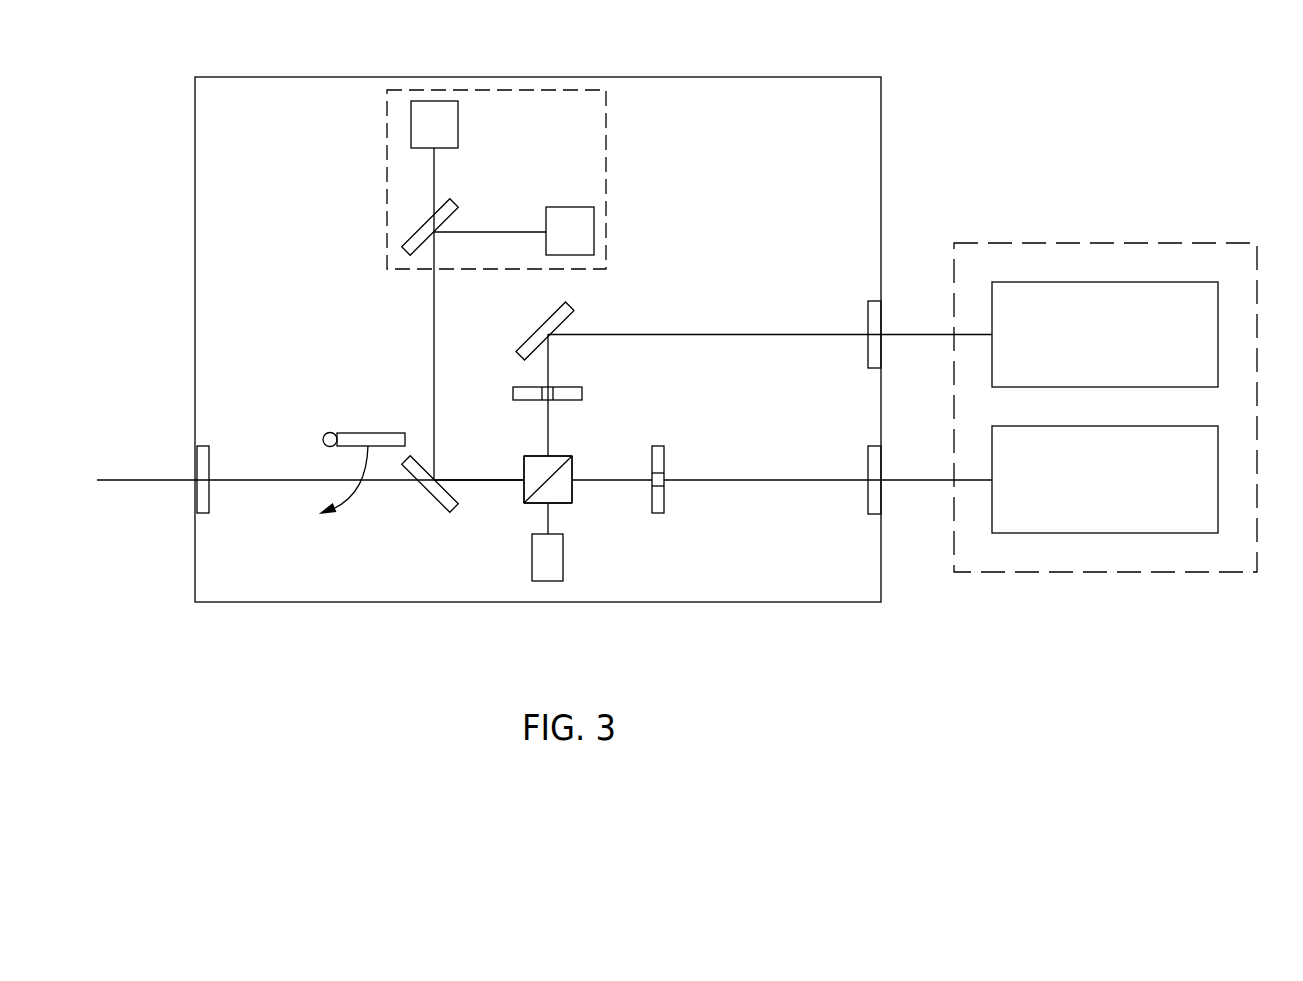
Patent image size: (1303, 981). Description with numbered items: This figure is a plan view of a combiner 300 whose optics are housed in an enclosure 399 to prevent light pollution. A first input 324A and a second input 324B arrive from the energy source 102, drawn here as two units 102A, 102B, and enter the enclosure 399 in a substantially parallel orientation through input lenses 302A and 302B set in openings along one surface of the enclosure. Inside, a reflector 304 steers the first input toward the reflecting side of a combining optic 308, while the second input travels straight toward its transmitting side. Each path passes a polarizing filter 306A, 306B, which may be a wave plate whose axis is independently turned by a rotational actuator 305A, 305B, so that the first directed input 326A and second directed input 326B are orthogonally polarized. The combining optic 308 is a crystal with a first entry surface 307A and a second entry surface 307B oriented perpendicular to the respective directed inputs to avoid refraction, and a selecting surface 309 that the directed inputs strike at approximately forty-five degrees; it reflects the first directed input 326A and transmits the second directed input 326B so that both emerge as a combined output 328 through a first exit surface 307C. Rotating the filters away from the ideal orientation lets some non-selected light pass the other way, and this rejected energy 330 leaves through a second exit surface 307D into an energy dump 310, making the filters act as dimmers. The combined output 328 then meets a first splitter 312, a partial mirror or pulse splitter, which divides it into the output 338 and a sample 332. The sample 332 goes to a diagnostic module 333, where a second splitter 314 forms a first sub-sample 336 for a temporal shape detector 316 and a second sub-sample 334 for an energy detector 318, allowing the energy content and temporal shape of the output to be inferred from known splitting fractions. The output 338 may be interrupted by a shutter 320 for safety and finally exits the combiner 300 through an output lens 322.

The combiner 300 is at (163, 125).
The enclosure 399 is at (692, 77).
The diagnostic module 333 is at (387, 108).
The energy detector 318 is at (458, 113).
The temporal shape detector 316 is at (594, 225).
The second sub-sample 334 is at (434, 183).
The sample 332 is at (434, 300).
The first sub-sample 336 is at (500, 232).
The second splitter 314 is at (405, 250).
The reflector 304 is at (565, 305).
The first input 324A is at (798, 334).
The first directed input 326A is at (548, 417).
The rotational actuator 305A is at (547, 387).
The polarizing filter 306A is at (555, 387).
The combining optic 308 is at (506, 470).
The selecting surface 309 is at (555, 470).
The first entry surface 307A is at (537, 456).
The second entry surface 307B is at (575, 487).
The first exit surface 307C is at (524, 488).
The second exit surface 307D is at (540, 505).
The rejected energy 330 is at (548, 519).
The energy dump 310 is at (532, 573).
The output 338 is at (145, 479).
The combined output 328 is at (472, 479).
The second directed input 326B is at (620, 480).
The second input 324B is at (808, 480).
The output lens 322 is at (210, 460).
The shutter 320 is at (357, 433).
The first splitter 312 is at (436, 511).
The rotational actuator 305B is at (665, 477).
The polarizing filter 306B is at (665, 497).
The input lens 302A is at (865, 313).
The input lens 302B is at (865, 463).
The energy source 102 is at (1180, 243).
The first target element 102A is at (1105, 334).
The second target element 102B is at (1105, 479).